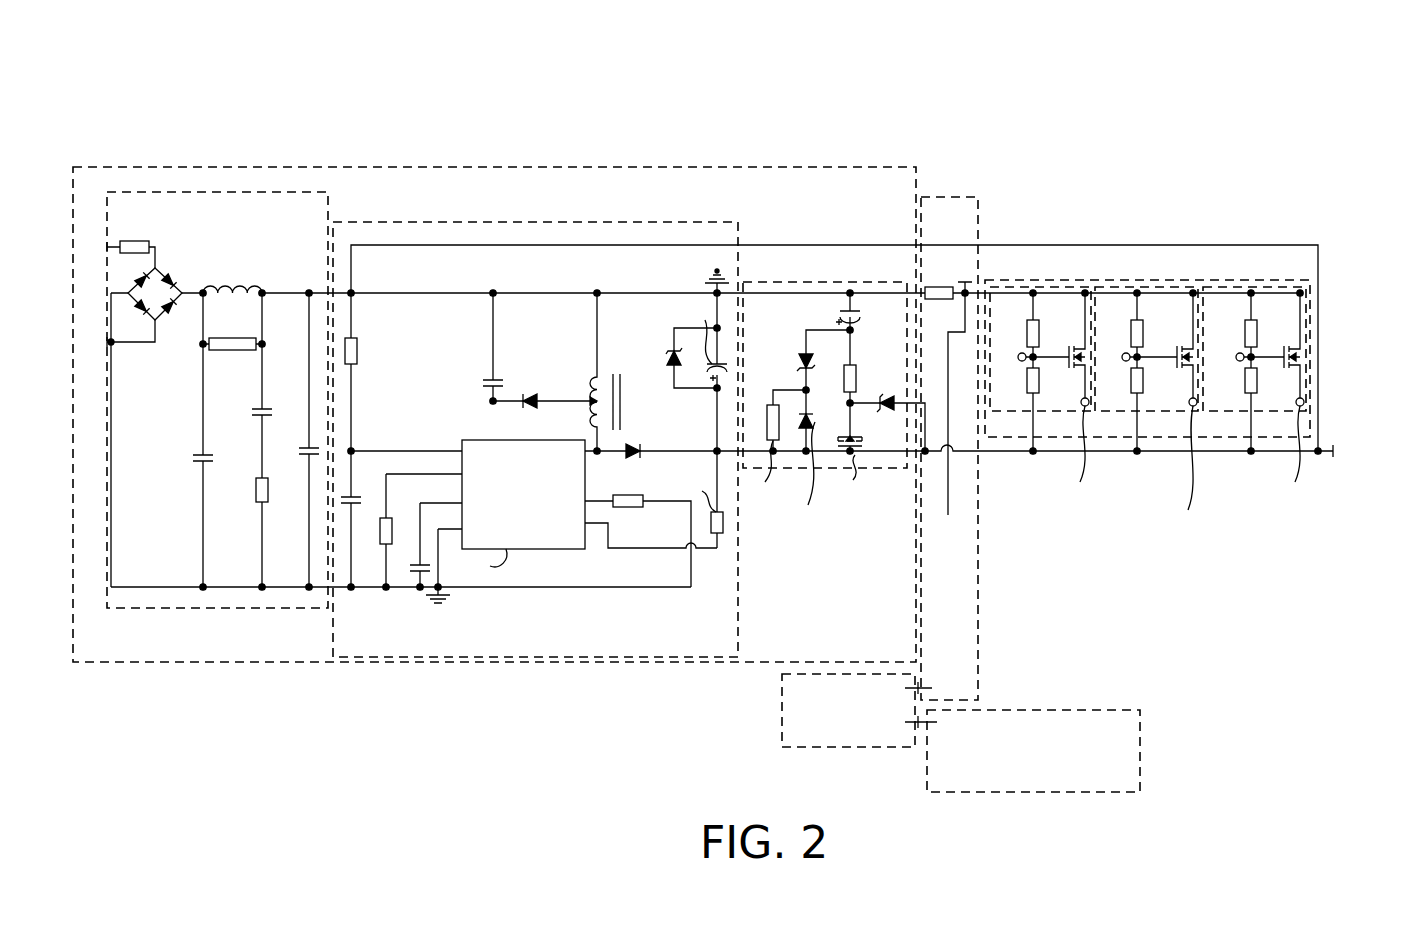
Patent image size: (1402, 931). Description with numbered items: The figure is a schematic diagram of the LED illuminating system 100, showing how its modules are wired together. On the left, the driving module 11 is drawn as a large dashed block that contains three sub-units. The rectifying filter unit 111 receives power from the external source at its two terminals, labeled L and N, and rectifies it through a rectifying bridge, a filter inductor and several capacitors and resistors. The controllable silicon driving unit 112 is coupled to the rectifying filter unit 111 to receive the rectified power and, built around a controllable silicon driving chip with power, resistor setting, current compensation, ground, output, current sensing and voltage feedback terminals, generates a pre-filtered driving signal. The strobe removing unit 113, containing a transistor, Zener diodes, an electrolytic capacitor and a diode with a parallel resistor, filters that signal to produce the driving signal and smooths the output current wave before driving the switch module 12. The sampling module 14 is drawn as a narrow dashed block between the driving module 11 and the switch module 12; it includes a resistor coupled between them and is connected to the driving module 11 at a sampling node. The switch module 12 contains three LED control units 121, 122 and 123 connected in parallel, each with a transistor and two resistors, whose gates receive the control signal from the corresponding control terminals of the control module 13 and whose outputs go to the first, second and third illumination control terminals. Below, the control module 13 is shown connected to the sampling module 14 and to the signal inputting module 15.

The LED illuminating system 100 is at (1135, 122).
The driving module 11 is at (887, 168).
The rectifying filter unit 111 is at (328, 197).
The controllable silicon driving unit 112 is at (667, 220).
The strobe removing unit 113 is at (754, 281).
The switch module 12 is at (1201, 278).
The LED control unit 121 is at (1040, 287).
The LED control unit 122 is at (1134, 287).
The LED control unit 123 is at (1277, 287).
The control module 13 is at (782, 701).
The sampling module 14 is at (979, 567).
The signal inputting module 15 is at (1056, 707).